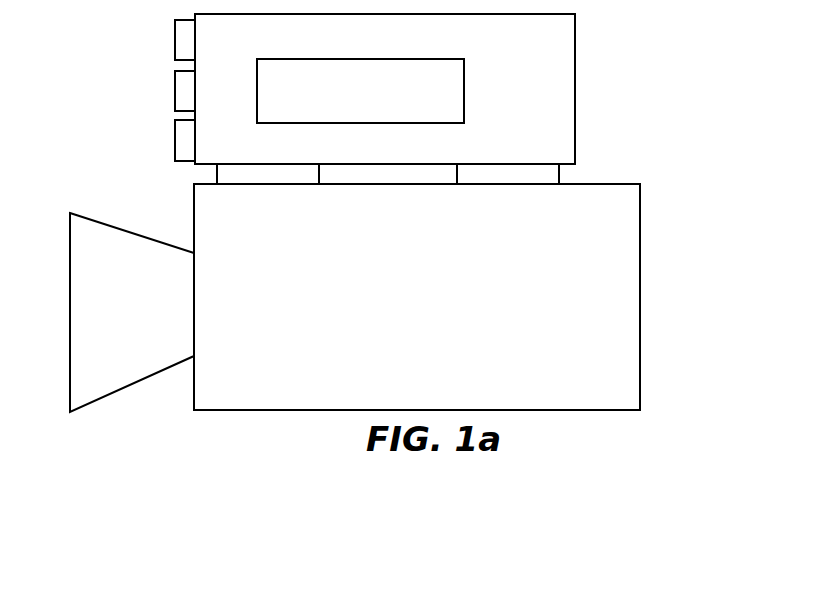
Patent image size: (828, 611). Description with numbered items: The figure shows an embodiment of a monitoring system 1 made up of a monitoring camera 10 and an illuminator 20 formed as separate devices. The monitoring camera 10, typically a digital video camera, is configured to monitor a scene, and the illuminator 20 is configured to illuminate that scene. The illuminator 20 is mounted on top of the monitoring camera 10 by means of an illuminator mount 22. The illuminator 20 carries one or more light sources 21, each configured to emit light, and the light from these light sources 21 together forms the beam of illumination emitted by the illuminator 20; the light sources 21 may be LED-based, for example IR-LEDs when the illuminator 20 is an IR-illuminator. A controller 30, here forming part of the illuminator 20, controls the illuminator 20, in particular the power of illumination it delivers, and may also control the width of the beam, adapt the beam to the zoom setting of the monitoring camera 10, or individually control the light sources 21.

The monitoring system 1 is at (84, 166).
The monitoring camera 10 is at (626, 261).
The illuminator 20 is at (553, 90).
The light source 21 is at (182, 40).
The illuminator mount 22 is at (551, 176).
The controller 30 is at (450, 78).